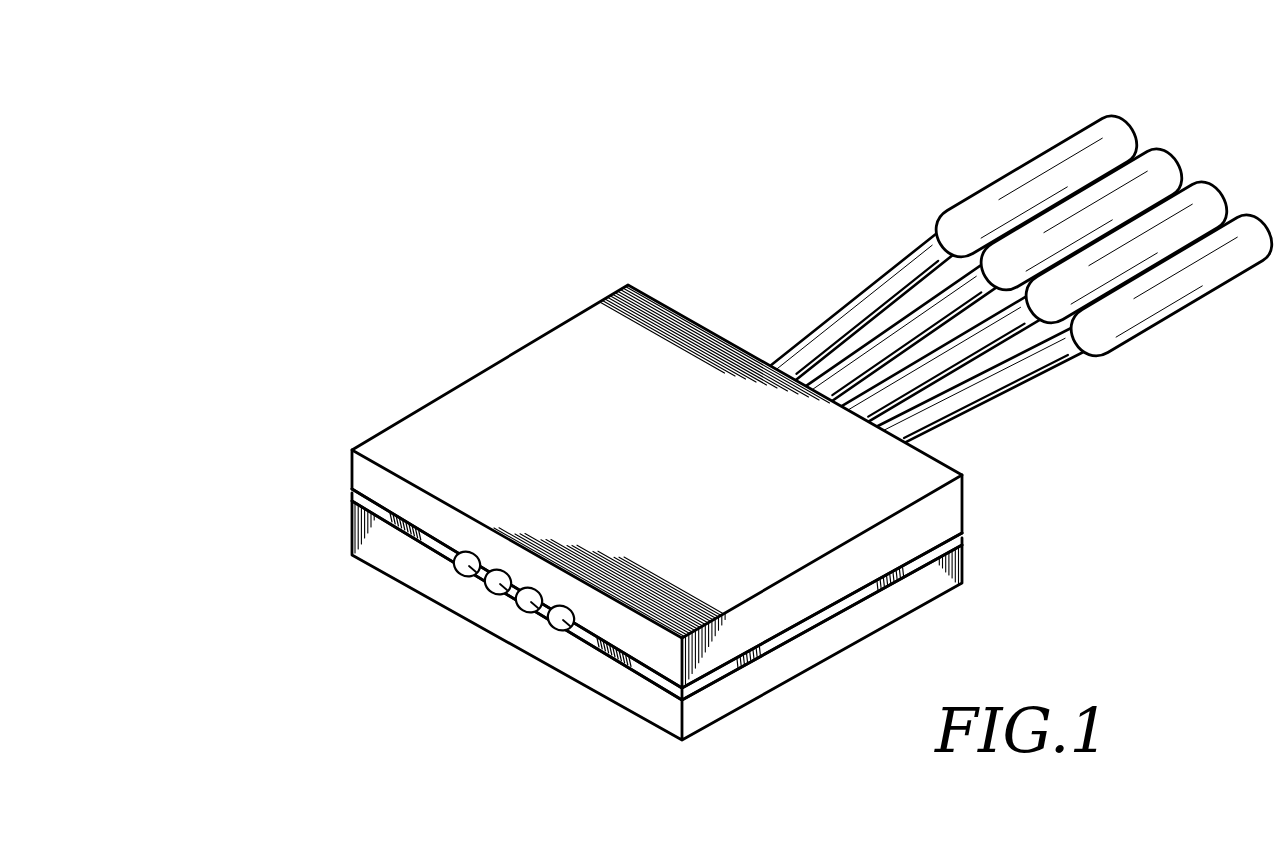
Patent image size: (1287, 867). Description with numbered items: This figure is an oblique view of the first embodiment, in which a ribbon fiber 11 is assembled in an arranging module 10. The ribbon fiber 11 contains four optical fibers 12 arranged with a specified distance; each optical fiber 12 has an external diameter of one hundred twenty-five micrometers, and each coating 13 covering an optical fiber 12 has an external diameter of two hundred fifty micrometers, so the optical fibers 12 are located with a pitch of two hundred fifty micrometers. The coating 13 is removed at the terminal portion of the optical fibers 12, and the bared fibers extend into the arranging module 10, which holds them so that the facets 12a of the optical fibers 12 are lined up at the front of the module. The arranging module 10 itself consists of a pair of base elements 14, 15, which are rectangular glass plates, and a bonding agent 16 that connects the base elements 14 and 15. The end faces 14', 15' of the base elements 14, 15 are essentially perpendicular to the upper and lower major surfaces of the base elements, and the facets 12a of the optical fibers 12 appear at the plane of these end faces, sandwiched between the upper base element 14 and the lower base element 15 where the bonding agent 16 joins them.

The arranging module 10 is at (657, 230).
The ribbon fiber 11 is at (965, 139).
The optical fibers 12 is at (880, 352).
The facets 12a is at (467, 574).
The coating 13 is at (1190, 280).
The base element 14 is at (657, 501).
The end face 14' is at (657, 669).
The base element 15 is at (626, 616).
The end face 15' is at (551, 600).
The bonding agent 16 is at (642, 672).